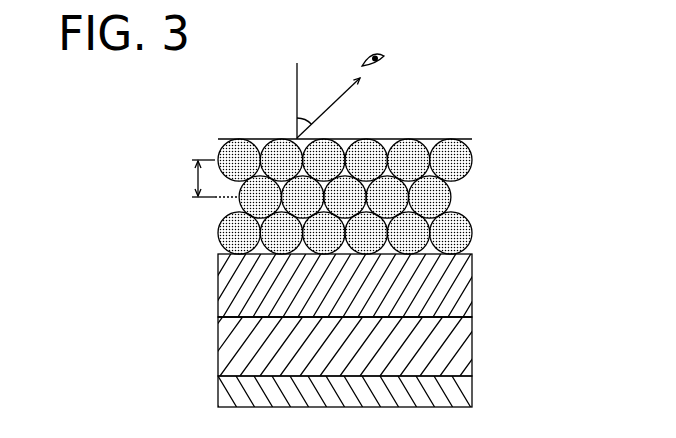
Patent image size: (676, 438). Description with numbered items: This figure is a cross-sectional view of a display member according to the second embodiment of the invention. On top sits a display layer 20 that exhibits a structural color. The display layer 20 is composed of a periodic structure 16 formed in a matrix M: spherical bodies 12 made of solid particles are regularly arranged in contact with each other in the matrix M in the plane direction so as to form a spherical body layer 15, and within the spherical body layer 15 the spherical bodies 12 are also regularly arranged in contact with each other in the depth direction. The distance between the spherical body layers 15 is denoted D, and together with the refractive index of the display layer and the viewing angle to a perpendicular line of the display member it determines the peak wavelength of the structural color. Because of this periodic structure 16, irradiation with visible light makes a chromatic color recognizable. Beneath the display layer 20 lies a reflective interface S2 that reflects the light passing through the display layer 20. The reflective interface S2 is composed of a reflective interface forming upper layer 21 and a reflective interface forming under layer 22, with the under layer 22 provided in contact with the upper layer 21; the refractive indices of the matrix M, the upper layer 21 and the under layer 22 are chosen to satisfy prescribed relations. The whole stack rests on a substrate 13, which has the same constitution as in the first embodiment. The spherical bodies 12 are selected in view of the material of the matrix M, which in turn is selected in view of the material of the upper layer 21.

The spherical body 12 is at (381, 139).
The substrate 13 is at (480, 377).
The spherical body layer 15 is at (218, 232).
The periodic structure 16 is at (218, 150).
The display layer 20 is at (339, 173).
The reflective interface forming upper layer 21 is at (480, 255).
The reflective interface forming under layer 22 is at (480, 318).
The matrix M is at (431, 139).
The reflective interface S2 is at (233, 318).
The distance between the spherical body layers D is at (207, 178).